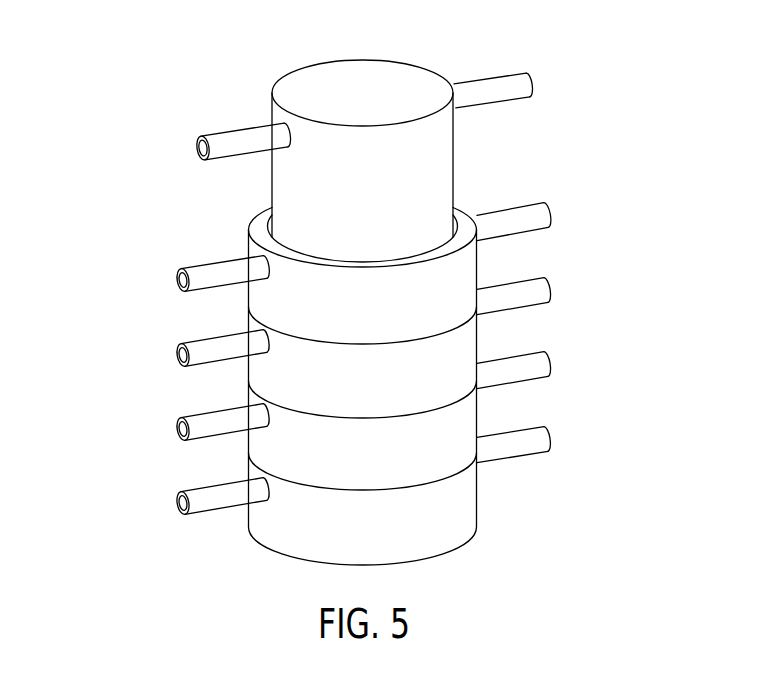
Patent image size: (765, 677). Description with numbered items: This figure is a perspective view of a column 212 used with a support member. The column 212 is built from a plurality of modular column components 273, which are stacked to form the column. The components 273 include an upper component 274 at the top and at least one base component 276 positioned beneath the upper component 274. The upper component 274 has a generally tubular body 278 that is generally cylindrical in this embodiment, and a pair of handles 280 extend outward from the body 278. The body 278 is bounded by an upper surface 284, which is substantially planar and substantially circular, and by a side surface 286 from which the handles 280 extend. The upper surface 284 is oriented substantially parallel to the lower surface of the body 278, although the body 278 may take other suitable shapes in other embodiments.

The column 212 is at (187, 73).
The modular column components 273 is at (243, 185).
The upper component 274 is at (455, 68).
The base component 276 is at (517, 333).
The tubular body 278 is at (455, 153).
The handles 280 is at (530, 85).
The upper surface 284 is at (380, 80).
The side surface 286 is at (455, 182).